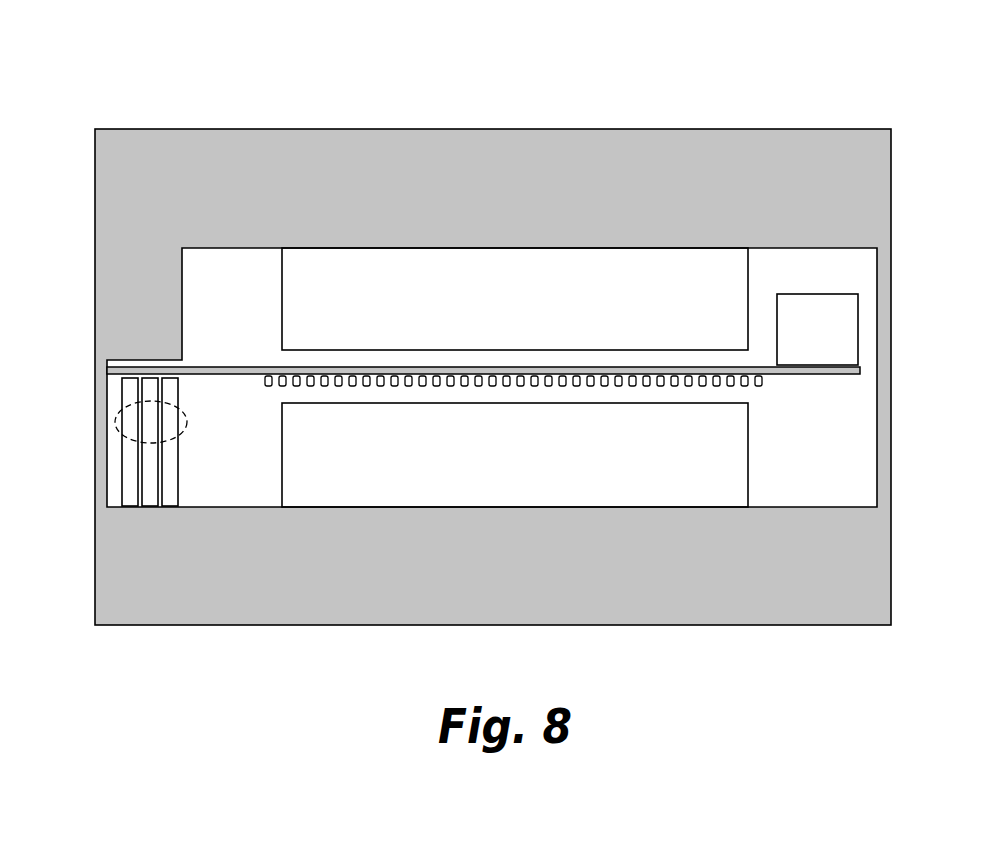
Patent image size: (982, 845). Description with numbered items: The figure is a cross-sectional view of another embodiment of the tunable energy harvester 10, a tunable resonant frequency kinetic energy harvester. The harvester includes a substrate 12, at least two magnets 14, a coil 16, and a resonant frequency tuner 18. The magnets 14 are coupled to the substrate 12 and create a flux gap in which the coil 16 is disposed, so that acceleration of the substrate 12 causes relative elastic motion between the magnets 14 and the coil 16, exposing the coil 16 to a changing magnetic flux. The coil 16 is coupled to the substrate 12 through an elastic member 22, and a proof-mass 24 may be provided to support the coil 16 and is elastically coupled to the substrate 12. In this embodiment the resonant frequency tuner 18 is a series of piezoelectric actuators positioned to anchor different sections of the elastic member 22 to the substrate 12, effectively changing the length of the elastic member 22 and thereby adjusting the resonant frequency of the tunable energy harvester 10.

The tunable energy harvester 10 is at (194, 61).
The substrate 12 is at (720, 626).
The magnets 14 is at (512, 313).
The coil 16 is at (758, 387).
The resonant frequency tuner 18 is at (118, 420).
The elastic member 22 is at (260, 367).
The proof-mass 24 is at (823, 343).